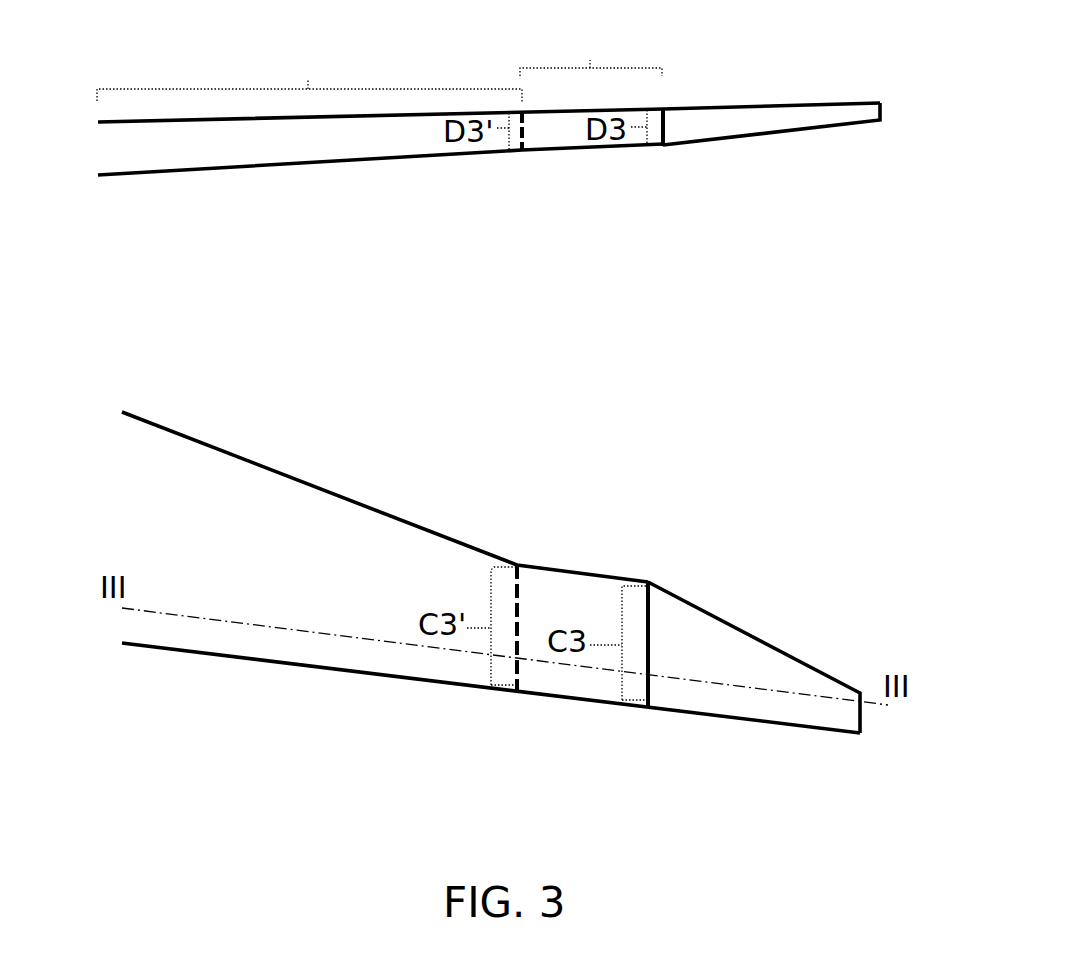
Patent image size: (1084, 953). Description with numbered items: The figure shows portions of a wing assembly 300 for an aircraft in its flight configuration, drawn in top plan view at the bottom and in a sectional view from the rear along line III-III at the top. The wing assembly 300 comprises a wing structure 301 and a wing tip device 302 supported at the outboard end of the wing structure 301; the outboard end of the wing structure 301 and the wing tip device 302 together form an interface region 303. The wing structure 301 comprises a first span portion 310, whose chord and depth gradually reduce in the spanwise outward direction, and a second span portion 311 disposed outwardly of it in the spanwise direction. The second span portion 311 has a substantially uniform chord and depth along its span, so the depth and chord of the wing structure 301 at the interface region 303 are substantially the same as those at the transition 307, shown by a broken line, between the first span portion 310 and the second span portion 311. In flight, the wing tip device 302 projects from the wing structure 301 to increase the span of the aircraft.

The wing assembly 300 is at (455, 186).
The wing structure 301 is at (180, 162).
The wing tip device 302 is at (725, 122).
The interface region 303 is at (667, 128).
The transition 307 is at (525, 137).
The first span portion 310 is at (309, 72).
The second span portion 311 is at (591, 44).